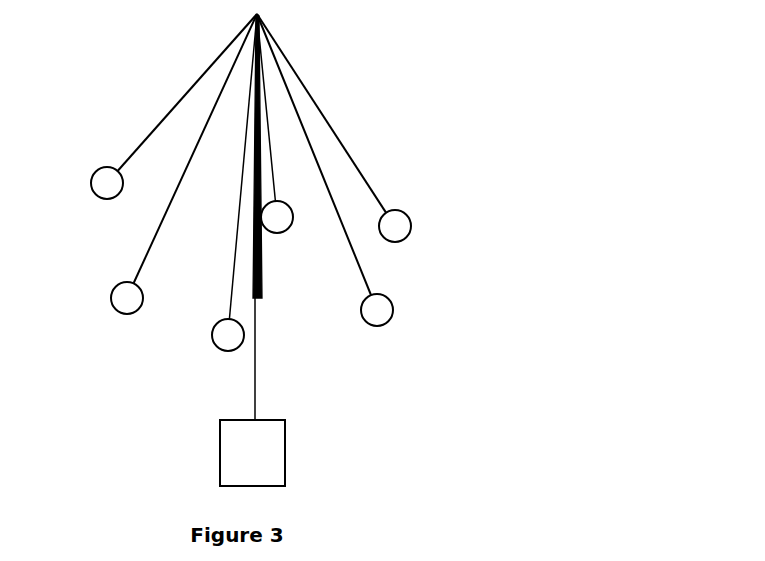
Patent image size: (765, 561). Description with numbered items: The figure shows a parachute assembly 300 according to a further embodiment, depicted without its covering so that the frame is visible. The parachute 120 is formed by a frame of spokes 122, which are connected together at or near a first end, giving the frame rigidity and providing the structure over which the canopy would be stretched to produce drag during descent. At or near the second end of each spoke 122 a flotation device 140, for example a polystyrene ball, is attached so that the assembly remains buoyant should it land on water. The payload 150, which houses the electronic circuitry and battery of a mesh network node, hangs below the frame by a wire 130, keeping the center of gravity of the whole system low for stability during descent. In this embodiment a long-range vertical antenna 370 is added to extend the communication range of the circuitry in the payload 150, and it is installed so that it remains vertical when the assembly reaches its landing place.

The parachute assembly 300 is at (252, 250).
The parachute 120 is at (294, 166).
The spokes 122 is at (313, 130).
The flotation device 140 is at (260, 259).
The long-range vertical antenna 370 is at (244, 172).
The wire 130 is at (238, 380).
The payload 150 is at (270, 453).